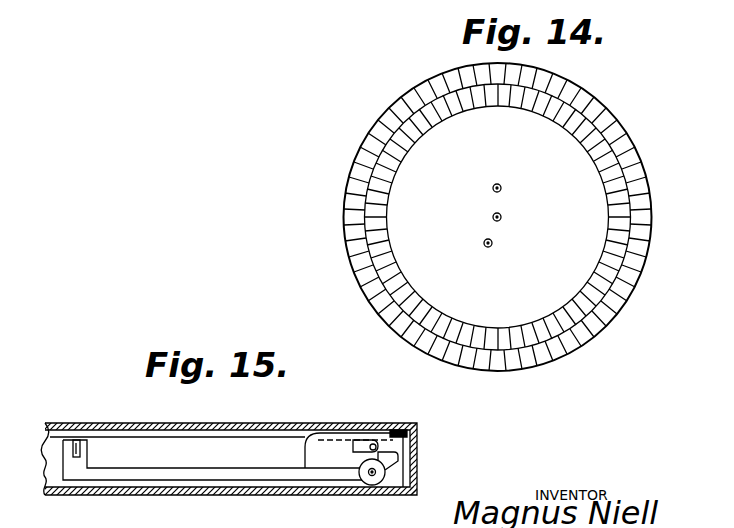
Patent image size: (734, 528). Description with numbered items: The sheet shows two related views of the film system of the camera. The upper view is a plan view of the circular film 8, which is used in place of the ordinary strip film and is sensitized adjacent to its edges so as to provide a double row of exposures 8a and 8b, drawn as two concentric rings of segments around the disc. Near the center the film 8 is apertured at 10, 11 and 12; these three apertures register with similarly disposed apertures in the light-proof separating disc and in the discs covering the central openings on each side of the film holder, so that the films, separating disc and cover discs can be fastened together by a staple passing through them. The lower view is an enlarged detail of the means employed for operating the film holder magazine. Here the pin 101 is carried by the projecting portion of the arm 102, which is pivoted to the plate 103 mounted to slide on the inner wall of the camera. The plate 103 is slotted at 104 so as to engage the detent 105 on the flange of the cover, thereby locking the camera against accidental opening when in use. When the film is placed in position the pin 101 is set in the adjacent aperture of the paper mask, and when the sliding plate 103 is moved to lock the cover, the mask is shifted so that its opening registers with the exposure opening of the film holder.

In FIG. 14, the circular film 8 is at (432, 243).
In FIG. 14, the row of exposures 8a is at (385, 190).
In FIG. 14, the row of exposures 8b is at (360, 163).
In FIG. 14, the aperture 10 is at (502, 188).
In FIG. 14, the aperture 11 is at (502, 217).
In FIG. 14, the aperture 12 is at (493, 243).
In FIG. 15, the pin 101 is at (80, 452).
In FIG. 15, the arm 102 is at (210, 463).
In FIG. 15, the plate 103 is at (328, 450).
In FIG. 15, the slot 104 is at (388, 450).
In FIG. 15, the detent 105 is at (398, 460).